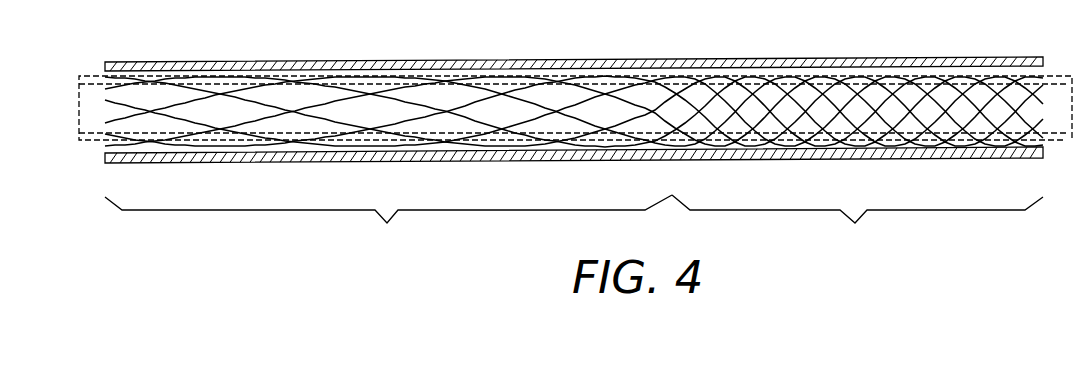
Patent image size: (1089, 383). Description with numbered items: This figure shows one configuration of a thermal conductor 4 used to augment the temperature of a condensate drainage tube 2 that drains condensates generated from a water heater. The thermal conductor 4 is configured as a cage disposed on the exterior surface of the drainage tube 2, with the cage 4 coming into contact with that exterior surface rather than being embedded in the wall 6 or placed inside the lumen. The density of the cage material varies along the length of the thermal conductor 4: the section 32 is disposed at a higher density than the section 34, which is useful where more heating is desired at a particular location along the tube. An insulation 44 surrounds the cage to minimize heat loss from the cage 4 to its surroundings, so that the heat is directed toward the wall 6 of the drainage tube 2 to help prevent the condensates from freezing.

The condensate drainage tube 2 is at (1063, 141).
The thermal conductor 4 is at (574, 106).
The wall 6 is at (468, 77).
The section 32 is at (839, 256).
The section 34 is at (372, 256).
The insulation 44 is at (830, 61).